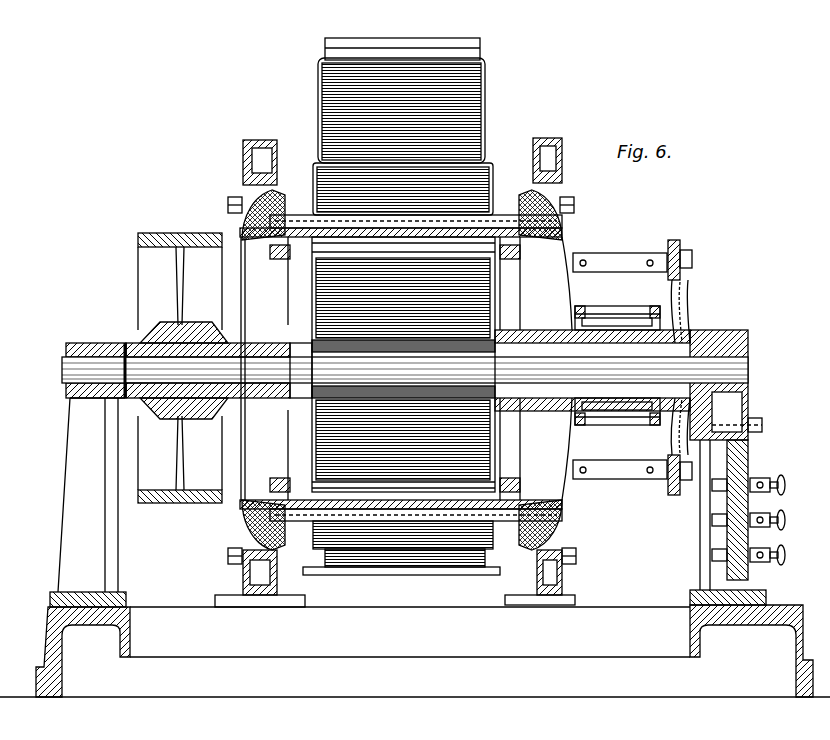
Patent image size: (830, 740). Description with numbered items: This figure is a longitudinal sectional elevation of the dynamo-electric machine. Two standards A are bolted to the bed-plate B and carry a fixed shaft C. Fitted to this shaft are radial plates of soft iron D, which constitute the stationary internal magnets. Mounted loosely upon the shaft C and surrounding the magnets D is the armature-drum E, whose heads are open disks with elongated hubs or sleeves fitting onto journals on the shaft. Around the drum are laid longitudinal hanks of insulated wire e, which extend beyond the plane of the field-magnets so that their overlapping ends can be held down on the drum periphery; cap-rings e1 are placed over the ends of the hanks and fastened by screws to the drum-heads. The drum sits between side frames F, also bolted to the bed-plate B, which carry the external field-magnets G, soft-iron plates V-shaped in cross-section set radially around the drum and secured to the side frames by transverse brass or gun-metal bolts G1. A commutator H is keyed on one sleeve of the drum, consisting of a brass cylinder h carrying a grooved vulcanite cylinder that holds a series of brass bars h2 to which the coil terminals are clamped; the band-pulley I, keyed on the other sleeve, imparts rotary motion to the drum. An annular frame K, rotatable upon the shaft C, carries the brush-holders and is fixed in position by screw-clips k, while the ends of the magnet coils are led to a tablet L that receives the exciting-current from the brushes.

The standards A is at (708, 549).
The bed-plate B is at (415, 643).
The fixed shaft C is at (62, 370).
The radial plates of soft iron D is at (403, 365).
The armature-drum E is at (465, 366).
The hanks of insulated wire e is at (236, 515).
The cap-rings e1 is at (248, 220).
The side frames F is at (243, 162).
The magnets G is at (485, 100).
The transverse bolts G1 is at (228, 205).
The band-pulley I is at (208, 368).
The commutator H is at (632, 367).
The brass cylinder h is at (612, 326).
The brass bars h2 is at (617, 372).
The annular frame K is at (690, 308).
The screw-clips k is at (762, 425).
The tablet L is at (748, 462).